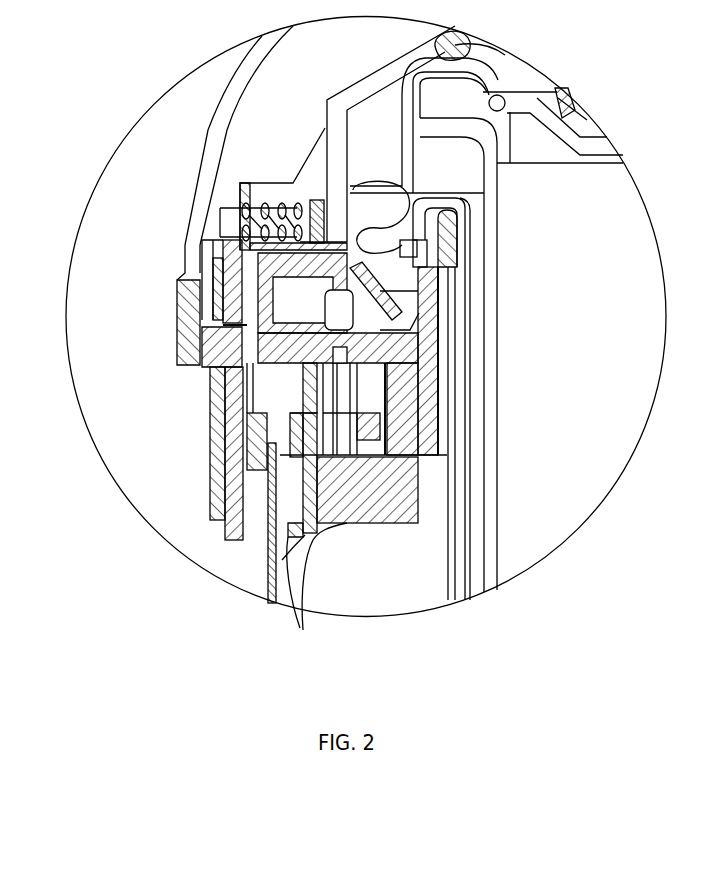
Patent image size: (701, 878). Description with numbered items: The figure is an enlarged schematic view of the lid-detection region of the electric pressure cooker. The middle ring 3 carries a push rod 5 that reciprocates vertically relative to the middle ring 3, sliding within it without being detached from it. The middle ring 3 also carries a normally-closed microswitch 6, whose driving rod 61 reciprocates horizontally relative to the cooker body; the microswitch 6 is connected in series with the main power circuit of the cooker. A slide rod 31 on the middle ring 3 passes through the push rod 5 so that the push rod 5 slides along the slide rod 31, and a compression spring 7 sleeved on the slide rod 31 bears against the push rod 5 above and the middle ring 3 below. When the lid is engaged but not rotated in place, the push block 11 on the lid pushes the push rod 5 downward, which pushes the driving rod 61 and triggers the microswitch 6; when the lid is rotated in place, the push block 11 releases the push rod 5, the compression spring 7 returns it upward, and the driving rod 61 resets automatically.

The middle ring 3 is at (182, 328).
The push block 11 is at (203, 350).
The slide rod 31 is at (303, 383).
The compression spring 7 is at (225, 494).
The push rod 5 is at (237, 540).
The driving rod 61 is at (268, 575).
The microswitch 6 is at (307, 575).